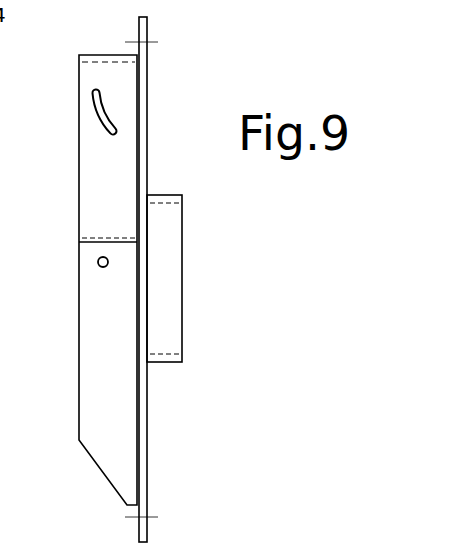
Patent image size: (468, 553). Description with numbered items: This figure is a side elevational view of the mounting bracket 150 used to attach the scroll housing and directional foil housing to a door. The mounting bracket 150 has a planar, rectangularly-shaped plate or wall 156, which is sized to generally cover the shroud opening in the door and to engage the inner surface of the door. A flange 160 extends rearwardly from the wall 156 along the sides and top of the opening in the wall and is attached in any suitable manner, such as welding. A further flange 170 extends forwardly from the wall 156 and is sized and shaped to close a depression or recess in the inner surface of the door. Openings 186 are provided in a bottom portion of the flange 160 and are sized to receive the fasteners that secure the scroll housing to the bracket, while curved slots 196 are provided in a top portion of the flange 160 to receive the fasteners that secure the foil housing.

The mounting bracket 150 is at (245, 313).
The plate or wall 156 is at (147, 415).
The flange 160 is at (79, 375).
The further flange 170 is at (172, 362).
The openings 186 is at (103, 268).
The curved slots 196 is at (92, 97).